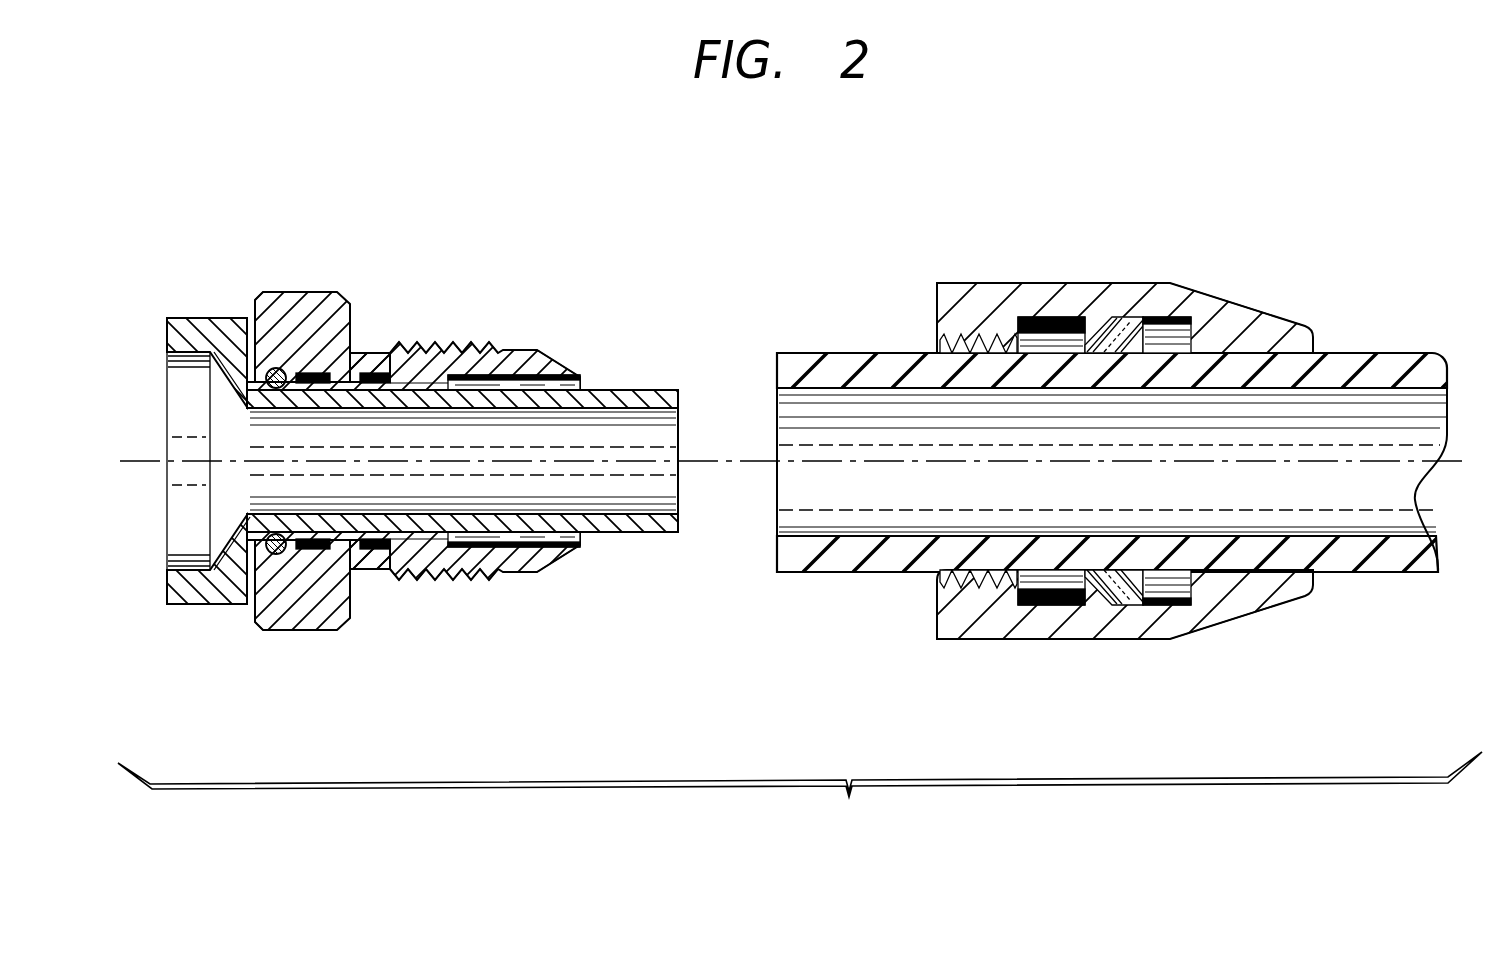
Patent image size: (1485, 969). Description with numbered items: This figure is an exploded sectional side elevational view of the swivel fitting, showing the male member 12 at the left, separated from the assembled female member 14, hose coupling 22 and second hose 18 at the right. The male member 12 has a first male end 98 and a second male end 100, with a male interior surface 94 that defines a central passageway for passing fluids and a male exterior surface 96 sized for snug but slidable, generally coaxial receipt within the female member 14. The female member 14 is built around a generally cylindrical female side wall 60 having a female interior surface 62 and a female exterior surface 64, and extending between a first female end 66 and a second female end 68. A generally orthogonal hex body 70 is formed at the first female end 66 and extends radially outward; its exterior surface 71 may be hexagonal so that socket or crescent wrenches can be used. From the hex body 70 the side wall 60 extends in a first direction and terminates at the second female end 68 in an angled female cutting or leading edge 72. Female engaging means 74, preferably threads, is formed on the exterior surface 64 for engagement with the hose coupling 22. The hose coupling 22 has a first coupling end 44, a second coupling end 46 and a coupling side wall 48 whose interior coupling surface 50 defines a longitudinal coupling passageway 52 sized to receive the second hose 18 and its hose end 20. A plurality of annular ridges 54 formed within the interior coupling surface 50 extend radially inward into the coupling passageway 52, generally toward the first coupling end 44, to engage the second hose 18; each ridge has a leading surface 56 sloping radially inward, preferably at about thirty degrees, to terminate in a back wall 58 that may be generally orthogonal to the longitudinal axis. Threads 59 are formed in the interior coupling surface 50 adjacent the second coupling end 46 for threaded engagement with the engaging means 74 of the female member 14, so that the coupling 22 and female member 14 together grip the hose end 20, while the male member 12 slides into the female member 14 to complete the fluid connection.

The male member 12 is at (172, 328).
The first male end 98 is at (207, 316).
The hex body 70 is at (302, 297).
The exterior surface of the hex body 71 is at (282, 291).
The female member 14 is at (338, 293).
The first female end 66 is at (380, 342).
The female exterior surface 64 is at (438, 344).
The female engaging means 74 is at (480, 360).
The female side wall 60 is at (527, 342).
The second female end 68 is at (530, 380).
The female cutting edge 72 is at (582, 382).
The male interior surface 94 is at (312, 410).
The male exterior surface 96 is at (670, 388).
The female interior surface 62 is at (520, 378).
The second male end 100 is at (628, 532).
The hose end 20 is at (823, 353).
The second hose 18 is at (1365, 355).
The second coupling end 46 is at (990, 283).
The threads 59 is at (967, 340).
The hose coupling 22 is at (1063, 300).
The coupling side wall 48 is at (1047, 352).
The interior coupling surface 50 is at (1050, 340).
The annular ridges 54 is at (1095, 340).
The back wall 58 is at (1100, 350).
The longitudinal coupling passageway 52 is at (1197, 325).
The leading surface 56 is at (1127, 350).
The first coupling end 44 is at (1252, 323).